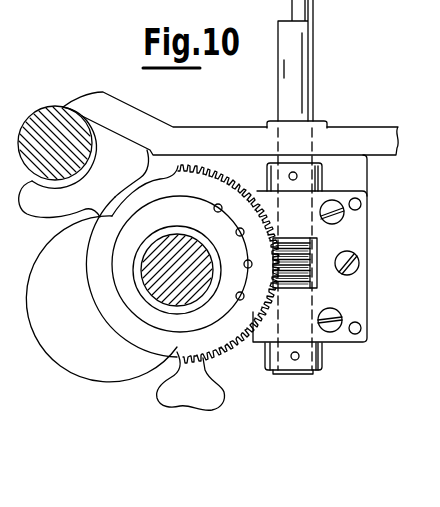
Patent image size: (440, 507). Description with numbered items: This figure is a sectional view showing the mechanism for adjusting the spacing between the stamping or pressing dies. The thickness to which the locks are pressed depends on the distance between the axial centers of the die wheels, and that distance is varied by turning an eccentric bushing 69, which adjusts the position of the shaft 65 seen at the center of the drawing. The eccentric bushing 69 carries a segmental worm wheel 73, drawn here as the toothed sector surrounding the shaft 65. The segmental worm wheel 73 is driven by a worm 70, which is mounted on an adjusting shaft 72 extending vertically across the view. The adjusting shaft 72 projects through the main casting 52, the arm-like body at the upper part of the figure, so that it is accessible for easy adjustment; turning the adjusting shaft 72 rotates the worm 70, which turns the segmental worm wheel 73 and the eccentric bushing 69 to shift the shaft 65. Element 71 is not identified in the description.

The main casting 52 is at (353, 132).
The shaft 65 is at (143, 268).
The eccentric bushing 69 is at (128, 310).
The worm 70 is at (310, 261).
The housing block 71 is at (367, 318).
The adjusting shaft 72 is at (314, 61).
The segmental worm wheel 73 is at (228, 353).